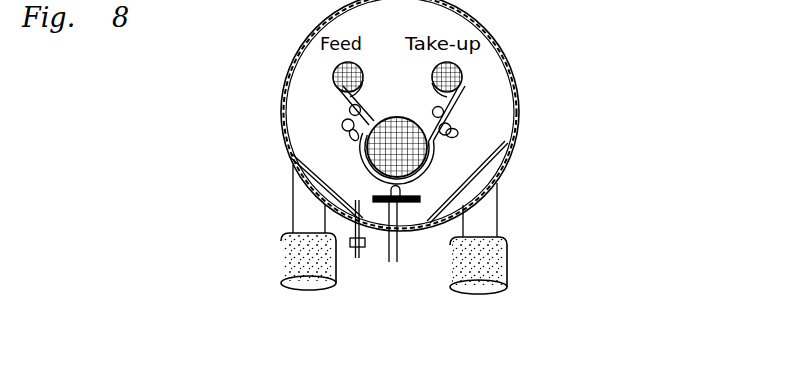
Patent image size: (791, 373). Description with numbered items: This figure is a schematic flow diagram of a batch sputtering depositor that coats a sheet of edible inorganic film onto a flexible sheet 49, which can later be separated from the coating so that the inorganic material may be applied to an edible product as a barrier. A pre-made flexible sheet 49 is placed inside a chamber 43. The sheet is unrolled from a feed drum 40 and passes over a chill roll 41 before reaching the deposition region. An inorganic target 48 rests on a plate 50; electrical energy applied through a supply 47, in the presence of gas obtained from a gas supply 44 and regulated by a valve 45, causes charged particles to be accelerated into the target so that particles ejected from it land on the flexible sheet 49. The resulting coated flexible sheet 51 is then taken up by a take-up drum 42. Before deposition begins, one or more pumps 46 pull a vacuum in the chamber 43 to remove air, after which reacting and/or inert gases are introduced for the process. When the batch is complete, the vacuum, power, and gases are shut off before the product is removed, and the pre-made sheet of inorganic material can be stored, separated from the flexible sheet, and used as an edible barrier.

The feed drum 40 is at (345, 67).
The chill roll 41 is at (350, 110).
The take-up drum 42 is at (470, 74).
The chamber 43 is at (484, 117).
The gas supply 44 is at (357, 268).
The valve 45 is at (349, 245).
The pump 46 is at (280, 245).
The supply 47 is at (395, 266).
The inorganic target 48 is at (412, 188).
The flexible sheet 49 is at (363, 144).
The plate 50 is at (422, 200).
The coated flexible sheet 51 is at (444, 150).